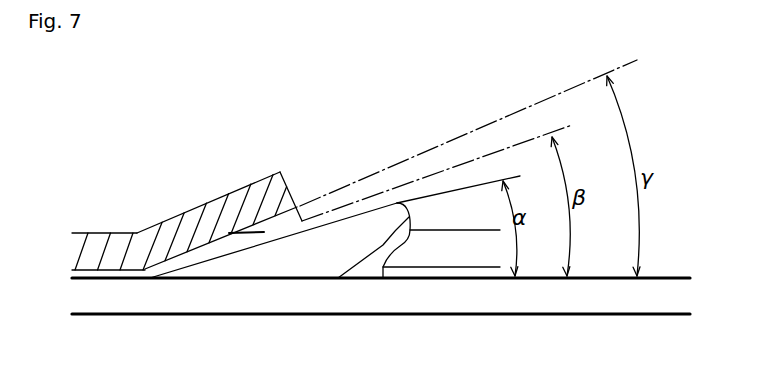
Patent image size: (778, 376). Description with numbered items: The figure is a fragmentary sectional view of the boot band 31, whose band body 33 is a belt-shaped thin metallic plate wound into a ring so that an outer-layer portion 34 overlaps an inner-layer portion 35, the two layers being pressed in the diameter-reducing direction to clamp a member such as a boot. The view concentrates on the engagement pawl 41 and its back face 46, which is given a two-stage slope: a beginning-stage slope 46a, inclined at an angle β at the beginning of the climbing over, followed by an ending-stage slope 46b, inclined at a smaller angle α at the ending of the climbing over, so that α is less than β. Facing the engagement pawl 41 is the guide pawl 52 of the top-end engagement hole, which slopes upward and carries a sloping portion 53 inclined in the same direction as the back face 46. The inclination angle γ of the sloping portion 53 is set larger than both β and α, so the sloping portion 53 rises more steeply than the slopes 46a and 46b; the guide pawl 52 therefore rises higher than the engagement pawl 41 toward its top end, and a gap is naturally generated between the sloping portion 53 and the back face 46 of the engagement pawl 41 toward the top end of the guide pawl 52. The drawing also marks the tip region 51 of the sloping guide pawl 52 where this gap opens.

The boot band 31 is at (352, 105).
The band body 33 is at (186, 228).
The outer-layer portion 34 is at (85, 230).
The inner-layer portion 35 is at (490, 320).
The engagement pawl 41 is at (320, 258).
The back face 46 is at (335, 237).
The beginning-stage slope 46a is at (229, 190).
The ending-stage slope 46b is at (375, 203).
The blade edge 51 is at (262, 167).
The guide pawl 52 is at (219, 228).
The sloping portion 53 is at (188, 257).